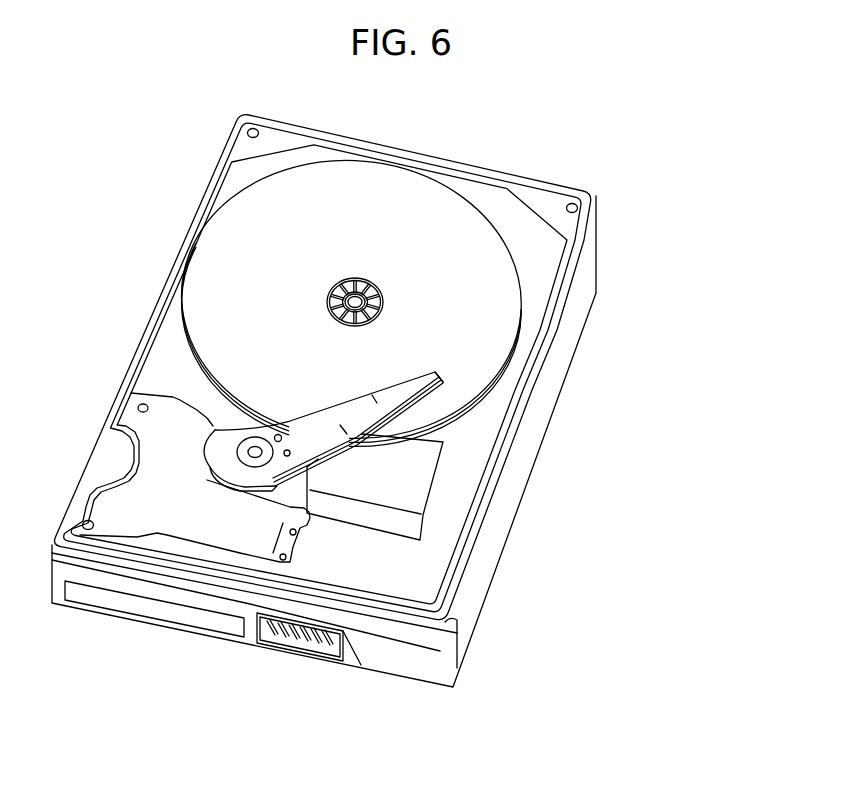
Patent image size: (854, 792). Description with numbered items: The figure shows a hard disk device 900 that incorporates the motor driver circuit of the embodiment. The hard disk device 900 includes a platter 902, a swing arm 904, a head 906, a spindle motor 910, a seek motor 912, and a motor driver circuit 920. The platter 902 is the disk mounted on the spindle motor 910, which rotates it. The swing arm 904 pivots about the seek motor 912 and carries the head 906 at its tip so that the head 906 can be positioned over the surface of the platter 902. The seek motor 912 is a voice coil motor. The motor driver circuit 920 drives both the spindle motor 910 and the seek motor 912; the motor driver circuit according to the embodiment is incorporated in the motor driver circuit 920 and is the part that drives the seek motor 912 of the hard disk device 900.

The hard disk device 900 is at (675, 139).
The platter 902 is at (410, 237).
The swing arm 904 is at (437, 474).
The head 906 is at (437, 372).
The spindle motor 910 is at (338, 279).
The seek motor 912 is at (210, 478).
The motor driver circuit 920 is at (403, 487).